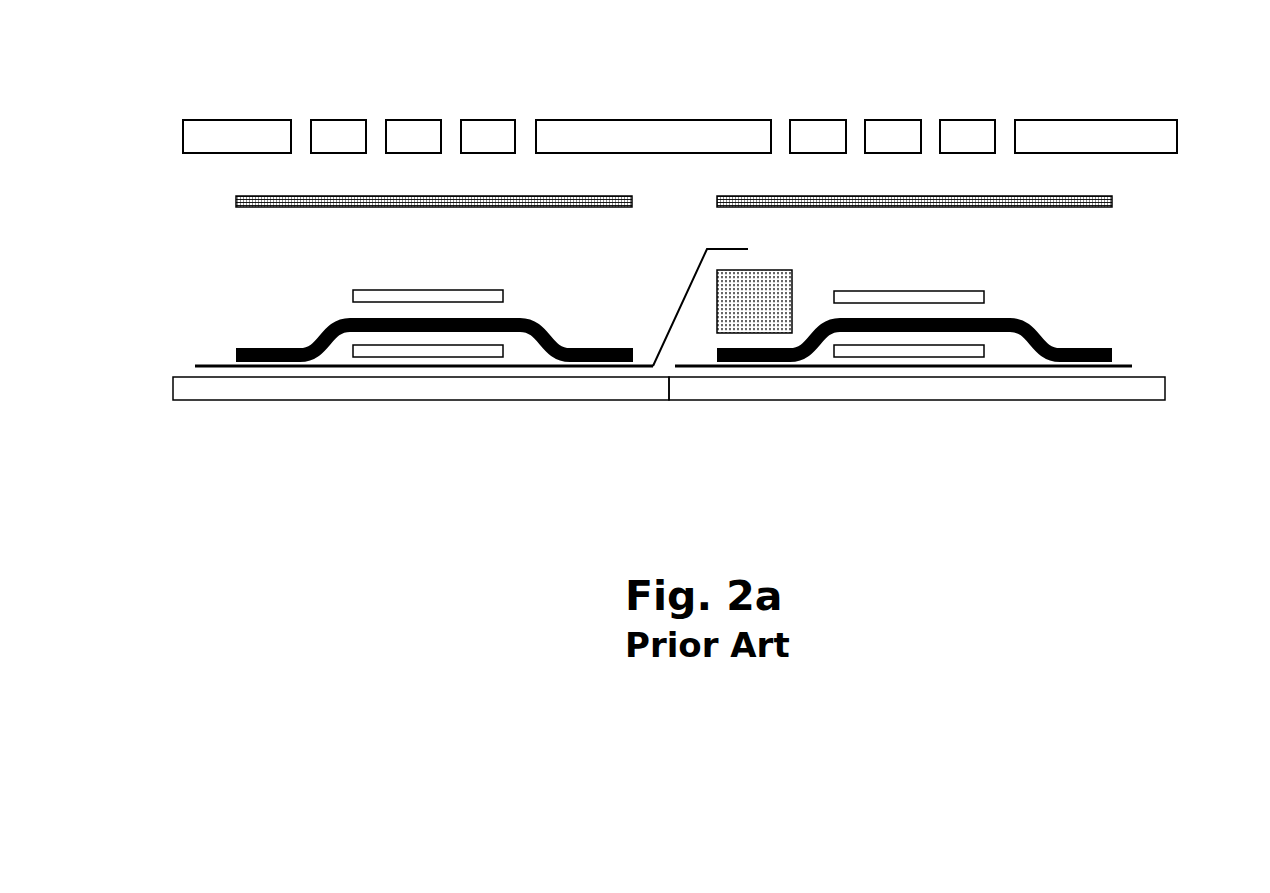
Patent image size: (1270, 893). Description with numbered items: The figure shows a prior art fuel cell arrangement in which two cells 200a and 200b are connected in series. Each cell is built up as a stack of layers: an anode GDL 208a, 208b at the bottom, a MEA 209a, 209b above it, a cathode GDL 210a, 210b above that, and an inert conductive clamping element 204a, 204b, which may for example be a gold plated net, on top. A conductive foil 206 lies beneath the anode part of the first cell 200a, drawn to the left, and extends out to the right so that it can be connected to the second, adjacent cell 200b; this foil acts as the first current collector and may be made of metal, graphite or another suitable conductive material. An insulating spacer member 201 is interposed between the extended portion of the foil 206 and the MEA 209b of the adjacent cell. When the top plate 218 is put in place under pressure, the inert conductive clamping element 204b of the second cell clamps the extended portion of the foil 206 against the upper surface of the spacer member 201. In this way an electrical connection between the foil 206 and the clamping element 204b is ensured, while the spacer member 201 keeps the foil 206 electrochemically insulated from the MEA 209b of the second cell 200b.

The first cell 200a is at (363, 434).
The second cell 200b is at (931, 424).
The insulating spacer member 201 is at (747, 315).
The inert conductive clamping element 204a is at (301, 194).
The inert conductive clamping element 204b is at (855, 194).
The conductive foil 206 is at (522, 370).
The anode GDL 208a is at (394, 358).
The anode GDL 208b is at (989, 359).
The MEA 209a is at (234, 355).
The MEA 209b is at (1115, 353).
The cathode GDL 210a is at (351, 290).
The cathode GDL 210b is at (988, 290).
The top plate 218 is at (1069, 118).